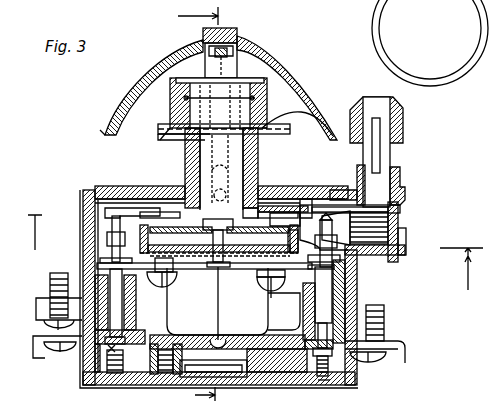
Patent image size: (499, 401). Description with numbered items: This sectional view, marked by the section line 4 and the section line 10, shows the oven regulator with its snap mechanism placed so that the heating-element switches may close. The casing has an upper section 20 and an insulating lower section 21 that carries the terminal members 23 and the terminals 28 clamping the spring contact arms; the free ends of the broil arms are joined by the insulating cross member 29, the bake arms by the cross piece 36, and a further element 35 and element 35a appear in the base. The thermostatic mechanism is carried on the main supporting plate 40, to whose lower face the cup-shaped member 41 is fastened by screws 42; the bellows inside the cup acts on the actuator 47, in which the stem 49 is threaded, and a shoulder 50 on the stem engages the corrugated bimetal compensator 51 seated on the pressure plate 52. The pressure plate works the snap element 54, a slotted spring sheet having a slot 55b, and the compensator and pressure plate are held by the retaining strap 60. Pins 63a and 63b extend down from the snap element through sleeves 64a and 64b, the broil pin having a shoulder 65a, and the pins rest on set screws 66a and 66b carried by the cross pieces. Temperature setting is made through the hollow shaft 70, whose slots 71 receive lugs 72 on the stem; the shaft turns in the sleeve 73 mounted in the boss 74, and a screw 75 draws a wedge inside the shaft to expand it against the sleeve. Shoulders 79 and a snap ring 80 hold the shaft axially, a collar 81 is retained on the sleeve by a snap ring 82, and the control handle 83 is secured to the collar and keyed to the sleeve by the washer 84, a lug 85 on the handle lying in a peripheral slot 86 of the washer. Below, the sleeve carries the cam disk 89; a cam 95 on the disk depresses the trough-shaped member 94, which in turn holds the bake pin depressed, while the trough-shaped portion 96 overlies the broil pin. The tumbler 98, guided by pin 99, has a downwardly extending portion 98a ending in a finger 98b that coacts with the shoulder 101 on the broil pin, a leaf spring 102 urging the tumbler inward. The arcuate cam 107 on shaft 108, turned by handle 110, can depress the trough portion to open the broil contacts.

The section line 4- 4 is at (188, 204).
The section line 10- 10 is at (255, 252).
The upper section 20 is at (90, 190).
The lower section 21 is at (350, 295).
The terminal members 23 is at (400, 345).
The terminal 28 is at (36, 298).
The cross member 29 is at (320, 378).
The bracket plate 35 is at (40, 350).
The base screw 35a is at (160, 375).
The cross piece 36 is at (115, 375).
The main supporting plate 40 is at (178, 290).
The cup-shaped member 41 is at (262, 322).
The screws 42 is at (268, 295).
The actuator 47 is at (220, 268).
The stem 49 is at (210, 268).
The shoulder 50 is at (255, 208).
The compensating element 51 is at (125, 188).
The pressure plate 52 is at (185, 228).
The snap element 54 is at (352, 262).
The slot 55b is at (106, 216).
The retaining strap 60 is at (288, 226).
The broil pin 63a is at (330, 326).
The bake pin 63b is at (124, 312).
The sleeve 64a is at (352, 303).
The sleeve 64b is at (100, 266).
The shoulder 65a is at (352, 273).
The set screw 66a is at (320, 384).
The set screw 66b is at (108, 374).
The hollow shaft 70 is at (240, 62).
The slots 71 is at (200, 152).
The lugs 72 is at (205, 165).
The sleeve 73 is at (259, 156).
The boss 74 is at (292, 205).
The screw 75 is at (240, 34).
The shoulders 79 is at (204, 47).
The snap ring 80 is at (165, 70).
The collar 81 is at (256, 115).
The snap ring 82 is at (258, 102).
The control handle 83 is at (268, 62).
The washer 84 is at (280, 136).
The lug 85 is at (158, 140).
The peripheral slot 86 is at (160, 129).
The cam disk 89 is at (234, 223).
The trough-shaped member 94 is at (153, 230).
The cam 95 is at (152, 225).
The trough-shaped portion 96 is at (316, 217).
The tumbler 98 is at (308, 210).
The downwardly extending portion 98a is at (388, 205).
The finger 98b is at (398, 230).
The pin 99 is at (312, 203).
The shoulder 101 is at (402, 243).
The leaf spring 102 is at (403, 220).
The arcuate cam 107 is at (402, 176).
The shaft 108 is at (393, 156).
The handle 110 is at (404, 112).